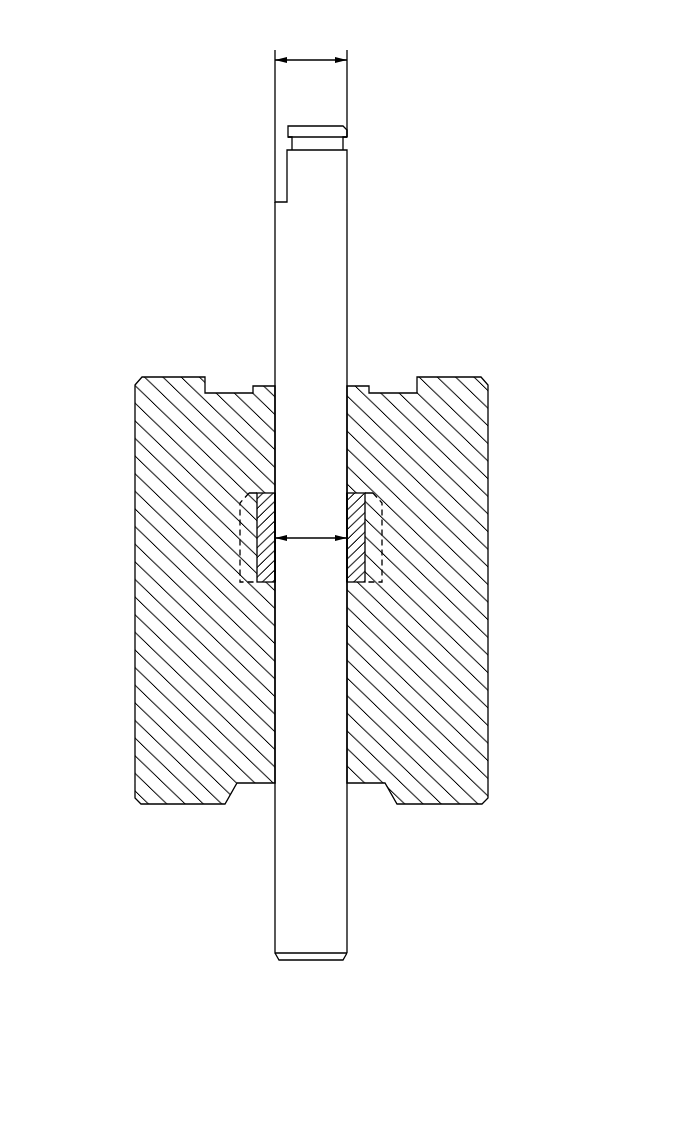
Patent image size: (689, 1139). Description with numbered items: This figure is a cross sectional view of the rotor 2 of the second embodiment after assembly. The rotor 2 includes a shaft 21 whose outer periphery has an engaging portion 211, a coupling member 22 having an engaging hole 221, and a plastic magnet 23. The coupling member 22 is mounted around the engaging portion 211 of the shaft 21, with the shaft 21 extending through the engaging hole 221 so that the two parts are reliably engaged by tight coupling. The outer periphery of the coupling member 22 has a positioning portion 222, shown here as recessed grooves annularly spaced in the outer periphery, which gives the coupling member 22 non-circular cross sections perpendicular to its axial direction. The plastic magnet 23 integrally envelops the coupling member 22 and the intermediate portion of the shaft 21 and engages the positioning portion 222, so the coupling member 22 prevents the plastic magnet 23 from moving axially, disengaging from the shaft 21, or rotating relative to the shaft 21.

The rotor 2 is at (443, 168).
The shaft 21 is at (251, 270).
The engaging portion 211 is at (348, 556).
The coupling member 22 is at (239, 468).
The engaging hole 221 is at (347, 493).
The positioning portion 222 is at (240, 517).
The plastic magnet 23 is at (153, 398).